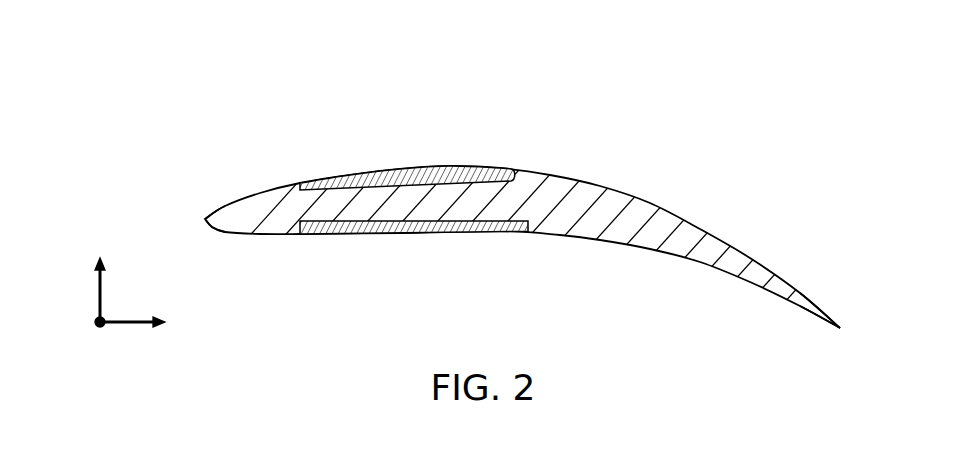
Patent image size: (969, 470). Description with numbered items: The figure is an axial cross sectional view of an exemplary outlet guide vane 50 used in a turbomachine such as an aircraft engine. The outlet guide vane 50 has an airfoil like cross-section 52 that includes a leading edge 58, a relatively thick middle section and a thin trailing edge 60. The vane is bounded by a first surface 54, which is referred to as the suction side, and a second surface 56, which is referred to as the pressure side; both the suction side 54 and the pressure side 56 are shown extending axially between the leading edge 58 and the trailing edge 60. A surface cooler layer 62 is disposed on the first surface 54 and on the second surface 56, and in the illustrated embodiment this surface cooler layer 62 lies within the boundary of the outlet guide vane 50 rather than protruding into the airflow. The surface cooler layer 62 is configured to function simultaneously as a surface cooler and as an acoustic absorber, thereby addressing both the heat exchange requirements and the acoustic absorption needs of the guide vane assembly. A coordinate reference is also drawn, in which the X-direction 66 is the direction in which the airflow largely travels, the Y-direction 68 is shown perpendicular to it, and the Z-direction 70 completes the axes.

The outlet guide vane 50 is at (760, 68).
The airfoil like cross-section 52 is at (728, 238).
The first surface 54 is at (613, 188).
The second surface 56 is at (590, 238).
The leading edge 58 is at (206, 220).
The trailing edge 60 is at (841, 327).
The surface cooler layer 62 is at (412, 170).
The X-direction 66 is at (153, 330).
The Y-direction 68 is at (108, 258).
The Z-direction 70 is at (98, 330).